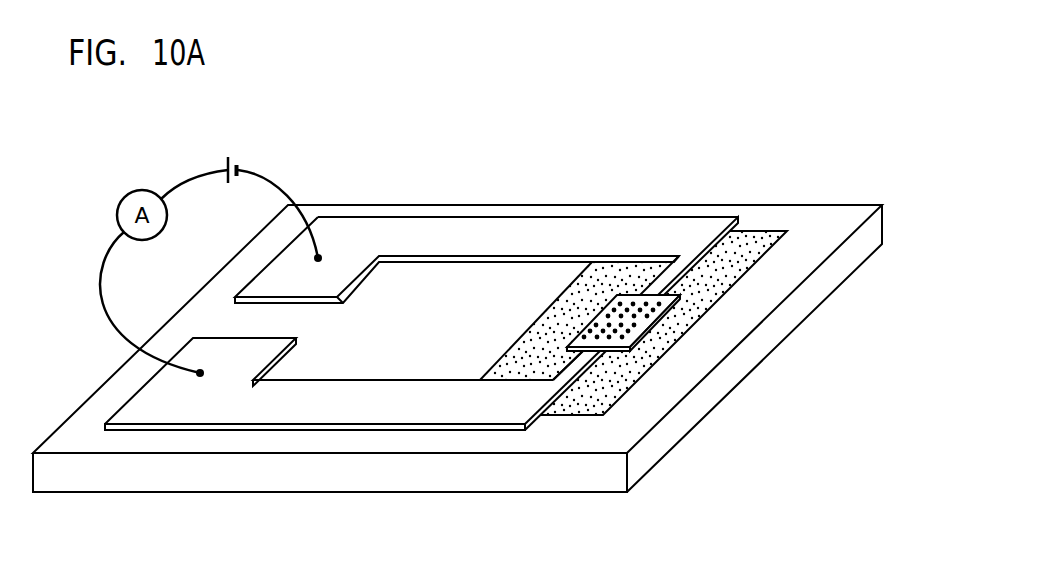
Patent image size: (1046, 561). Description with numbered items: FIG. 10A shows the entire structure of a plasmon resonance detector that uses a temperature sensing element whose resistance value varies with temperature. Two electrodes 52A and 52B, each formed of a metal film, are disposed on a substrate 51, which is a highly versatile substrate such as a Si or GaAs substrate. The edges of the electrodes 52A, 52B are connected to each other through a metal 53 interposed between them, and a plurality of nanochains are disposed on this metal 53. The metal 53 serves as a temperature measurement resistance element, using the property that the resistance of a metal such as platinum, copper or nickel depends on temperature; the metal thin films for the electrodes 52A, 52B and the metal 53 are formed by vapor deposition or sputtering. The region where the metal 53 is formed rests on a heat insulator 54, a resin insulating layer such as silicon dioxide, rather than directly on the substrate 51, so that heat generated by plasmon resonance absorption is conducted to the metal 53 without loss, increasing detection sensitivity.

The substrate 51 is at (672, 443).
The electrode 52A is at (532, 225).
The electrode 52B is at (405, 387).
The metal 53 is at (586, 328).
The heat insulator 54 is at (763, 238).